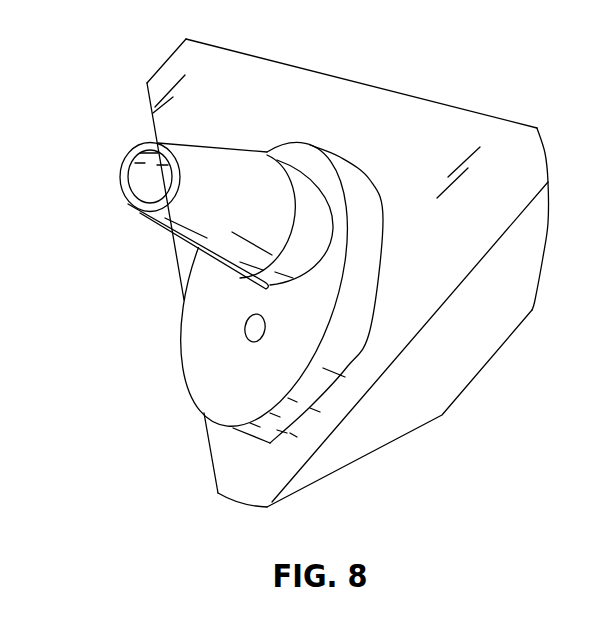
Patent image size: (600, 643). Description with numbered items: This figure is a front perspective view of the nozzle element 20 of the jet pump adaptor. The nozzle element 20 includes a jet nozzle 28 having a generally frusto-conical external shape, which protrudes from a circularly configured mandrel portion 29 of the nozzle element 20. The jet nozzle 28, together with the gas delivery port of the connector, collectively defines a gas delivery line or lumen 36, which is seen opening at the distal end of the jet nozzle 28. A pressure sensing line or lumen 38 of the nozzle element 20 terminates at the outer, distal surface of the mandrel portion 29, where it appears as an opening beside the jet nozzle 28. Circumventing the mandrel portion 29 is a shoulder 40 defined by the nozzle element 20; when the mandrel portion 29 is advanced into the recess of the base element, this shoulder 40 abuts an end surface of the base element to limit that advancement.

The nozzle element 20 is at (349, 267).
The jet nozzle 28 is at (163, 221).
The mandrel portion 29 is at (200, 383).
The gas delivery lumen 36 is at (142, 183).
The pressure sensing lumen 38 is at (245, 327).
The shoulder 40 is at (240, 468).